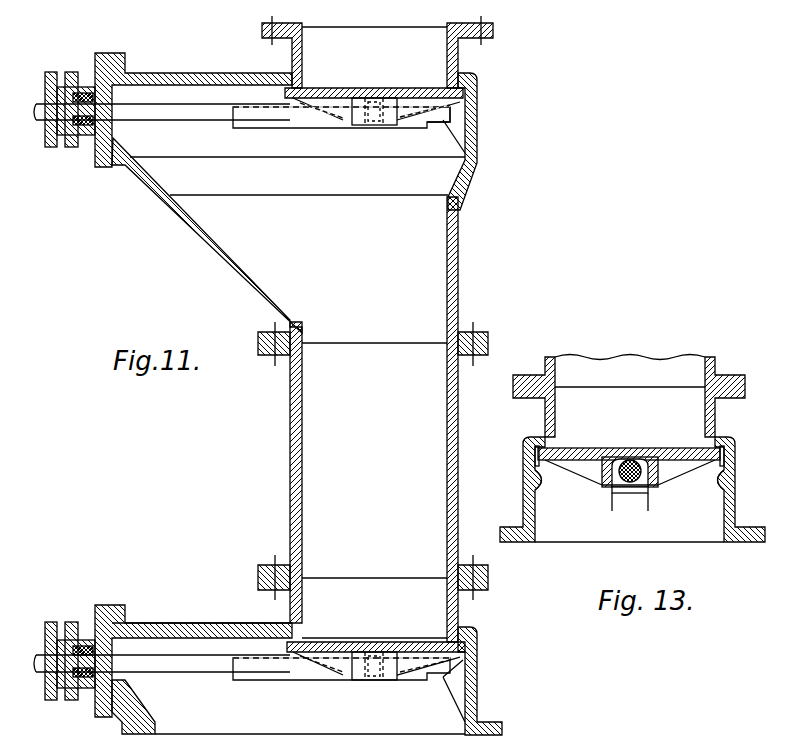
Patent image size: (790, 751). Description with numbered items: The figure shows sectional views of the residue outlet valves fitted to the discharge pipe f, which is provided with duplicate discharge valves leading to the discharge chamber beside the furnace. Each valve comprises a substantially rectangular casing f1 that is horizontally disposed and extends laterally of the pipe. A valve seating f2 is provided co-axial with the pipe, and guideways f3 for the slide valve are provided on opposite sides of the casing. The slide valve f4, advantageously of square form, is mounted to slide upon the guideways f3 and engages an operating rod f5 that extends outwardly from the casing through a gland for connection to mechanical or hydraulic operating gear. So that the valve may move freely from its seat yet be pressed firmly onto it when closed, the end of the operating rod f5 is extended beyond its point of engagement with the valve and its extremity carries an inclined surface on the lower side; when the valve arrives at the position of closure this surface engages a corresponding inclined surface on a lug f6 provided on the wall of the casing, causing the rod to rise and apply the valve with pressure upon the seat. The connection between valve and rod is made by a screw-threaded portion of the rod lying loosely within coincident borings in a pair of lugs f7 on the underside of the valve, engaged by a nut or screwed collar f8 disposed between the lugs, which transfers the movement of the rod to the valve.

In FIG. 11, the discharge pipe f is at (413, 417).
In FIG. 13, the discharge pipe f is at (629, 396).
In FIG. 11, the casing f1 is at (468, 174).
In FIG. 13, the casing f1 is at (729, 477).
In FIG. 11, the valve seating f2 is at (285, 623).
In FIG. 11, the guideways f3 is at (270, 124).
In FIG. 13, the guideways f3 is at (547, 484).
In FIG. 11, the slide valve f4 is at (340, 90).
In FIG. 13, the slide valve f4 is at (605, 450).
In FIG. 11, the operating rod f5 is at (222, 108).
In FIG. 13, the operating rod f5 is at (633, 490).
In FIG. 11, the lug f6 is at (460, 127).
In FIG. 13, the lug f6 is at (640, 494).
In FIG. 11, the lugs f7 is at (374, 675).
In FIG. 11, the nut or screwed collar f8 is at (330, 678).
In FIG. 13, the nut or screwed collar f8 is at (647, 457).